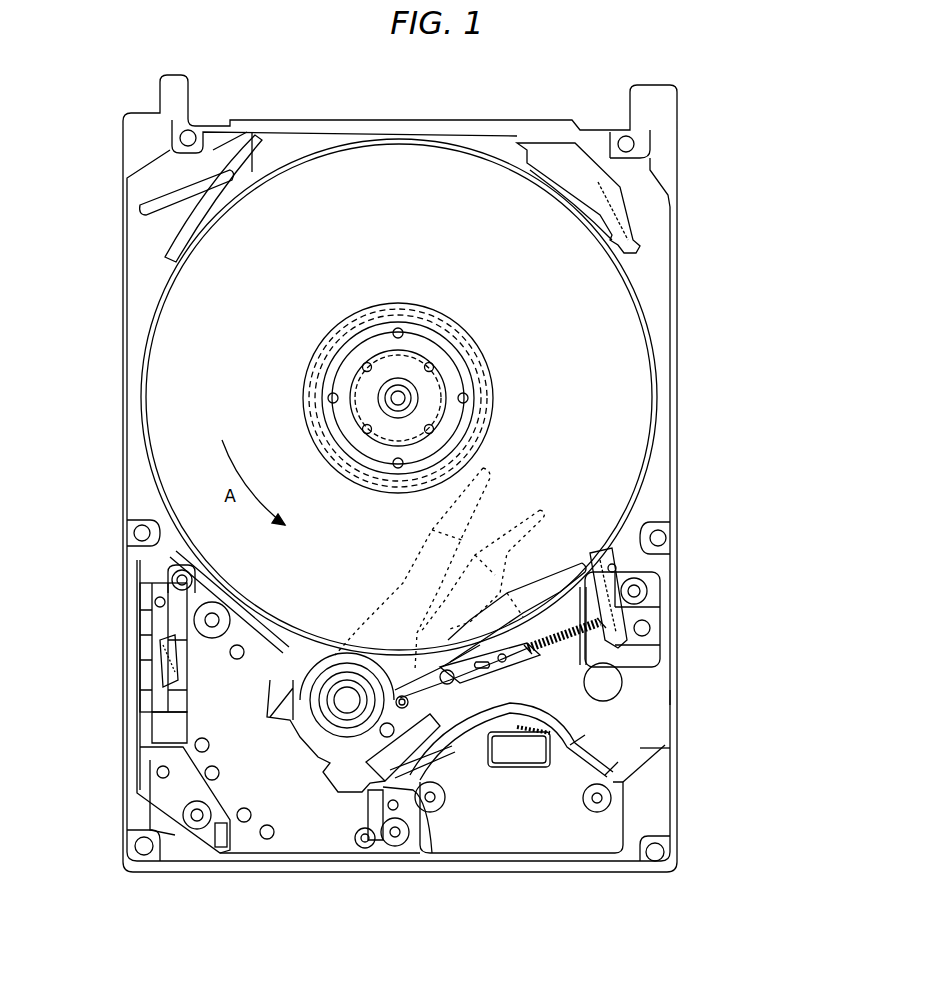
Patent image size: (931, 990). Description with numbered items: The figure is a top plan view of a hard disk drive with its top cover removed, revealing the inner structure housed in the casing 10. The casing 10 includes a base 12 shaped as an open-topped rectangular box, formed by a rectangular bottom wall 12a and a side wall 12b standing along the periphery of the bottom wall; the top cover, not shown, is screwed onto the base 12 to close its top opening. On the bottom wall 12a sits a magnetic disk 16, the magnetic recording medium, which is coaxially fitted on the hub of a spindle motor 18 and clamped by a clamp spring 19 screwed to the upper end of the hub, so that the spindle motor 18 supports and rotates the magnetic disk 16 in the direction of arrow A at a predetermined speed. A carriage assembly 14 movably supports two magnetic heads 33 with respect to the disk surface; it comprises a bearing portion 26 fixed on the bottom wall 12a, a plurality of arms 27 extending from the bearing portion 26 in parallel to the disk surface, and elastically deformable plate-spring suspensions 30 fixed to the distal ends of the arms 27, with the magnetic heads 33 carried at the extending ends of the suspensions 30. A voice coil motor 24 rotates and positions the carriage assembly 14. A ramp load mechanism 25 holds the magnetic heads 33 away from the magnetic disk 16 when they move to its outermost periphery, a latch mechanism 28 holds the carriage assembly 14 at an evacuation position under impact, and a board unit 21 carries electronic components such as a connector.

The casing 10 is at (688, 305).
The base 12 is at (742, 680).
The bottom wall 12a is at (677, 748).
The side wall 12b is at (678, 697).
The carriage assembly 14 is at (443, 700).
The magnetic disk 16 is at (645, 393).
The spindle motor 18 is at (384, 302).
The clamp spring 19 is at (455, 385).
The board unit 21 is at (510, 845).
The voice coil motor 24 is at (299, 830).
The ramp load mechanism 25 is at (657, 628).
The bearing portion 26 is at (347, 663).
The arm 27 is at (468, 675).
The latch mechanism 28 is at (145, 656).
The suspension 30 is at (573, 644).
The magnetic head 33 is at (583, 515).